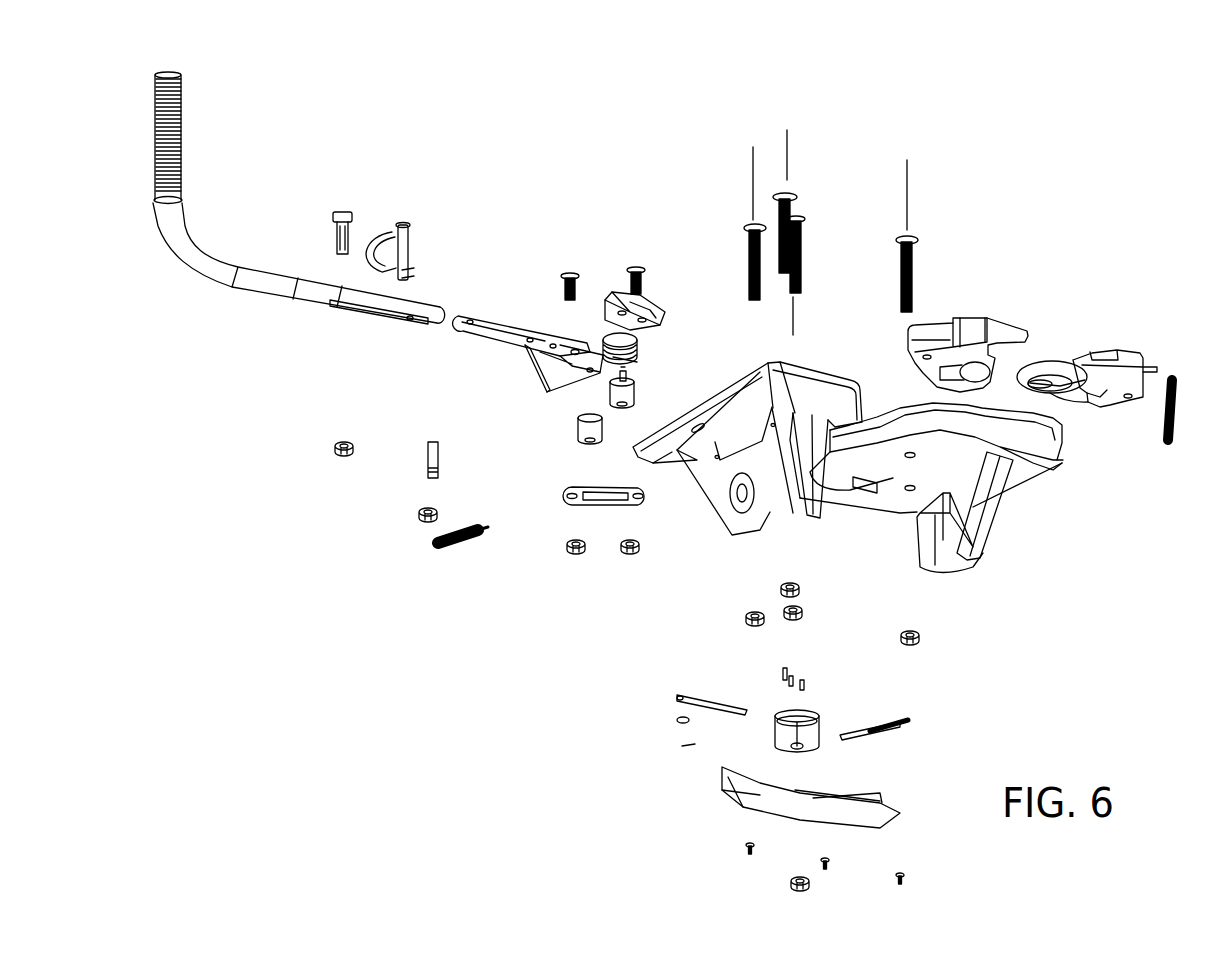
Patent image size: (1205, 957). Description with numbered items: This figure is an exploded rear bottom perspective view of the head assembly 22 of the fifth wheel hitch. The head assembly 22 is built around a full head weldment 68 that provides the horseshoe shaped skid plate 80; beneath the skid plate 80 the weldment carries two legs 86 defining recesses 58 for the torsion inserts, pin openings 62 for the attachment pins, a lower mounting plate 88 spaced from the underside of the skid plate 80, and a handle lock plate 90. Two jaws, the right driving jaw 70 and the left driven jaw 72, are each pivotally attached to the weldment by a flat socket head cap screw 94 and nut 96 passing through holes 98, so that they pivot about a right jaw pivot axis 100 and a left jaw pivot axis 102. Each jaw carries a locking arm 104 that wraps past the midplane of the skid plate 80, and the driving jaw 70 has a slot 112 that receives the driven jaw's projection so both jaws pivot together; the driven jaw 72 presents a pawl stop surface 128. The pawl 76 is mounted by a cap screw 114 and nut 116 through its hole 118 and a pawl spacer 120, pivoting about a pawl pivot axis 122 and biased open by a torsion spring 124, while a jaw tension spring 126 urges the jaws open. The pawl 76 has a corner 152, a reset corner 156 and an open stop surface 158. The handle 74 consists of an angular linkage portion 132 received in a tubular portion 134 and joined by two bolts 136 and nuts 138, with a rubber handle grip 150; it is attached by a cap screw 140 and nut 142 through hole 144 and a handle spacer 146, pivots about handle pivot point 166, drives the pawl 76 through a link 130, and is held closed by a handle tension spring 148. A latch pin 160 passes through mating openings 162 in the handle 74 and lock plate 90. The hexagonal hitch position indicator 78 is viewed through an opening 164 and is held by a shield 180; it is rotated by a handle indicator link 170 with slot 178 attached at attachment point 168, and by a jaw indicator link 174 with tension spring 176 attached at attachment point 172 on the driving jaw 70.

The head assembly 22 is at (1052, 156).
The recesses 58 is at (930, 552).
The pin openings 62 is at (740, 493).
The full head weldment 68 is at (902, 468).
The right jaw 70 is at (1093, 341).
The left jaw 72 is at (1007, 352).
The handle 74 is at (371, 222).
The pawl 76 is at (656, 327).
The hitch position indicator 78 is at (790, 729).
The skid plate 80 is at (813, 366).
The legs 86 is at (990, 498).
The lower mounting plate 88 is at (877, 502).
The handle lock plate 90 is at (652, 448).
The flat socket head cap screw 94 is at (800, 275).
The nut 96 is at (808, 617).
The holes 98 is at (927, 360).
The right jaw pivot axis 100 is at (907, 195).
The left jaw pivot axis 102 is at (798, 322).
The locking arm 104 is at (1018, 330).
The slot 112 is at (1047, 389).
The flat socket head cap screw 114 is at (800, 203).
The nut 116 is at (787, 585).
The hole 118 is at (607, 296).
The pawl spacer 120 is at (634, 392).
The pawl pivot axis 122 is at (788, 150).
The torsion spring 124 is at (610, 340).
The jaw tension spring 126 is at (1158, 412).
The pawl stop surface 128 is at (947, 335).
The link 130 is at (610, 492).
The angular linkage portion 132 is at (536, 377).
The tubular portion 134 is at (207, 250).
The bolts 136 is at (345, 212).
The nuts 138 is at (345, 445).
The flat socket head cap screw 140 is at (745, 248).
The nut 142 is at (752, 623).
The hole 144 is at (590, 373).
The handle spacer 146 is at (578, 430).
The handle tension spring 148 is at (455, 530).
The rubber handle grip 150 is at (185, 160).
The corner 152 is at (668, 299).
The reset corner 156 is at (627, 293).
The open stop surface 158 is at (652, 302).
The latch pin 160 is at (410, 248).
The openings 162 is at (410, 321).
The opening 164 is at (800, 793).
The handle pivot point 166 is at (750, 163).
The attachment point 168 is at (548, 389).
The handle indicator link 170 is at (720, 708).
The attachment point 172 is at (1153, 366).
The jaw indicator link 174 is at (848, 737).
The tension spring 176 is at (895, 727).
The slot 178 is at (680, 700).
The shield 180 is at (788, 791).